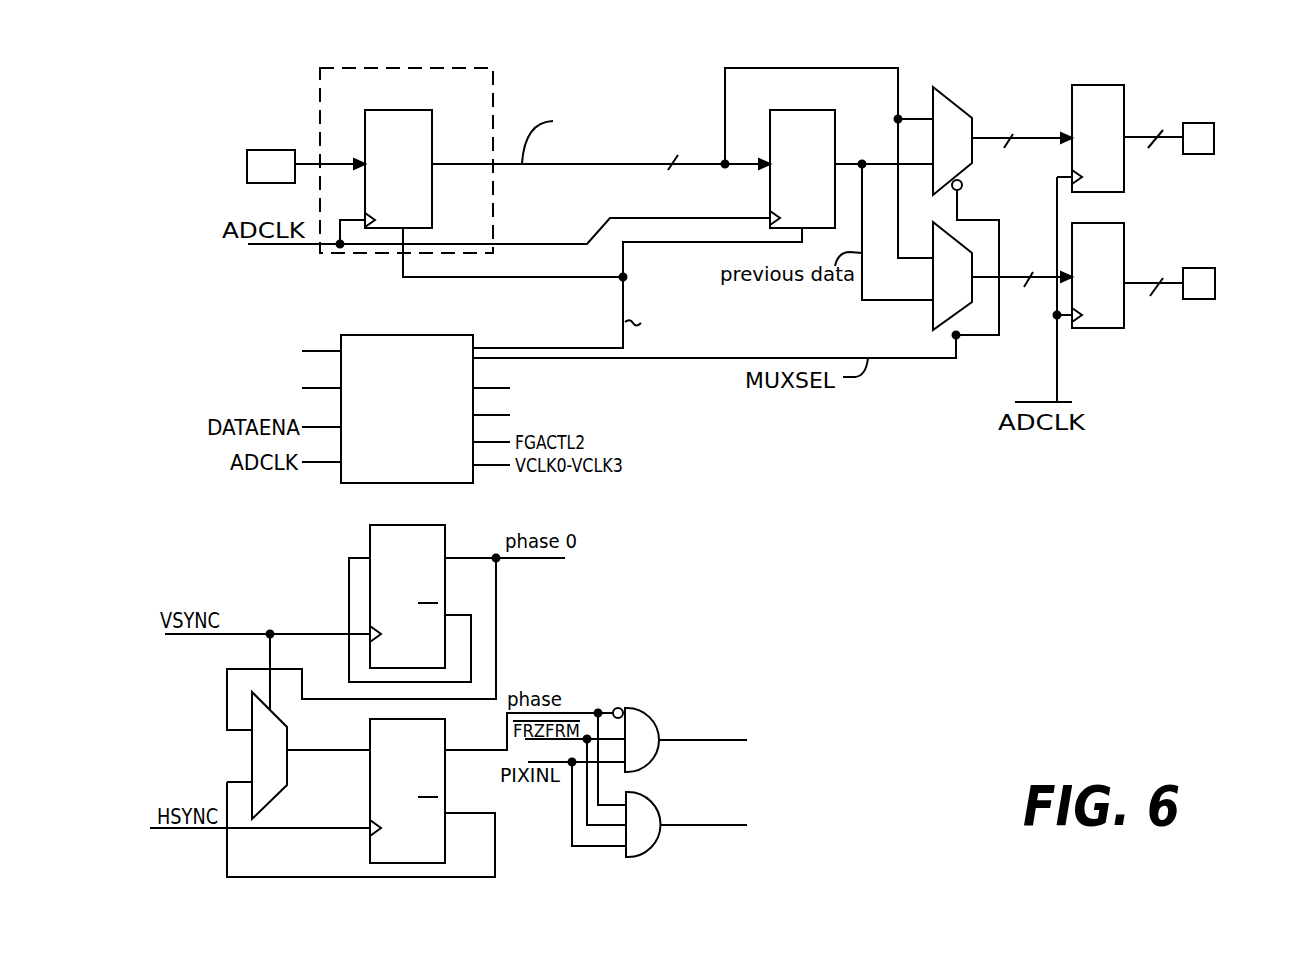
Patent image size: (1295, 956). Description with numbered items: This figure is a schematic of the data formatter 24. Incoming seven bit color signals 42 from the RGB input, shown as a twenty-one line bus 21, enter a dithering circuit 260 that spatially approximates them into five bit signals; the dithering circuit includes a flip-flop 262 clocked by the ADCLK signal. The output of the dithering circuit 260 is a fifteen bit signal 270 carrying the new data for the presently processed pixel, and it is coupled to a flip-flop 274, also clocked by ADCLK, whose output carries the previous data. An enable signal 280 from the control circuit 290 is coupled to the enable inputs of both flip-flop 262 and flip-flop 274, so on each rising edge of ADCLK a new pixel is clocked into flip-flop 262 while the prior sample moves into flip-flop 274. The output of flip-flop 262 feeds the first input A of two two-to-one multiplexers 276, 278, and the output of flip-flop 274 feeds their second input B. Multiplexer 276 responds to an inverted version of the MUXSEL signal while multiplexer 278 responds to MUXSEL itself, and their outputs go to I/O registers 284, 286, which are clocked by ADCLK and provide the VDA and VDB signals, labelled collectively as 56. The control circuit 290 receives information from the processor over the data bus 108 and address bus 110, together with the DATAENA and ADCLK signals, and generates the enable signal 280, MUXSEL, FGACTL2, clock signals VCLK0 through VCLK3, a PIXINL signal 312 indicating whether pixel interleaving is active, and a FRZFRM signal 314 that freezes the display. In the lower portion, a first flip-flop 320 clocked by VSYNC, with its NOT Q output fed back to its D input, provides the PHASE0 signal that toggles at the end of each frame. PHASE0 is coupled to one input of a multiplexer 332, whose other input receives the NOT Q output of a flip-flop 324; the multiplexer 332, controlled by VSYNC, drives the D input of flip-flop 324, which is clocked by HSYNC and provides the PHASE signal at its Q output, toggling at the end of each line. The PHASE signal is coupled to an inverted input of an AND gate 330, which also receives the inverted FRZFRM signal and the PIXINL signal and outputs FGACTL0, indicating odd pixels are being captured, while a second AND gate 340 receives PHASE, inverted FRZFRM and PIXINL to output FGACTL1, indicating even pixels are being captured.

The data formatter 24 is at (1150, 60).
The incoming seven bit color signals 42 is at (307, 162).
The 21-bit RGB data bus 21 is at (331, 174).
The VDA and VDB signals 56 is at (1215, 281).
The data bus 108 is at (321, 387).
The address bus 110 is at (290, 334).
The dithering circuit 260 is at (383, 64).
The flip-flop 262 is at (432, 155).
The fifteen bit signal 270 is at (737, 165).
The flip-flop 274 is at (787, 110).
The multiplexer 276 is at (962, 102).
The multiplexer 278 is at (933, 316).
The enable signal 280 is at (518, 348).
The I/O register 284 is at (1100, 85).
The I/O register 286 is at (1085, 328).
The control circuit 290 is at (368, 335).
The PIXINL signal 312 is at (536, 415).
The FRZFRM signal 314 is at (542, 388).
The first flip-flop 320 is at (370, 537).
The flip-flop 324 is at (445, 796).
The AND gate 330 is at (632, 708).
The multiplexer 332 is at (280, 790).
The second AND gate 340 is at (642, 856).